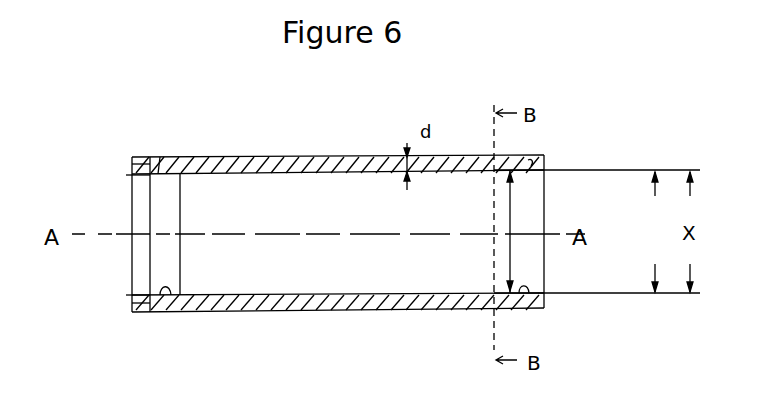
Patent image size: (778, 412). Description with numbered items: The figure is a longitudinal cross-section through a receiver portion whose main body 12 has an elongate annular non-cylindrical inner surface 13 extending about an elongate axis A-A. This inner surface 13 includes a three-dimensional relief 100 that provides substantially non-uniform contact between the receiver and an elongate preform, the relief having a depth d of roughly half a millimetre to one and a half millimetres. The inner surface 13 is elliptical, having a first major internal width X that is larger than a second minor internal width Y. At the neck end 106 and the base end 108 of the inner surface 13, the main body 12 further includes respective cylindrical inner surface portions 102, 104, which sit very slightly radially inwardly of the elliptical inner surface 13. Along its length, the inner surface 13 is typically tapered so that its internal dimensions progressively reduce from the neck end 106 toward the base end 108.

The three-dimensional relief 100 is at (221, 170).
The base end 108 is at (160, 157).
The elongate annular non-cylindrical inner surface 13 is at (310, 158).
The main body 12 is at (413, 311).
The neck end 106 is at (530, 155).
The cylindrical inner surface portion 104 is at (158, 296).
The cylindrical inner surface portion 102 is at (524, 308).